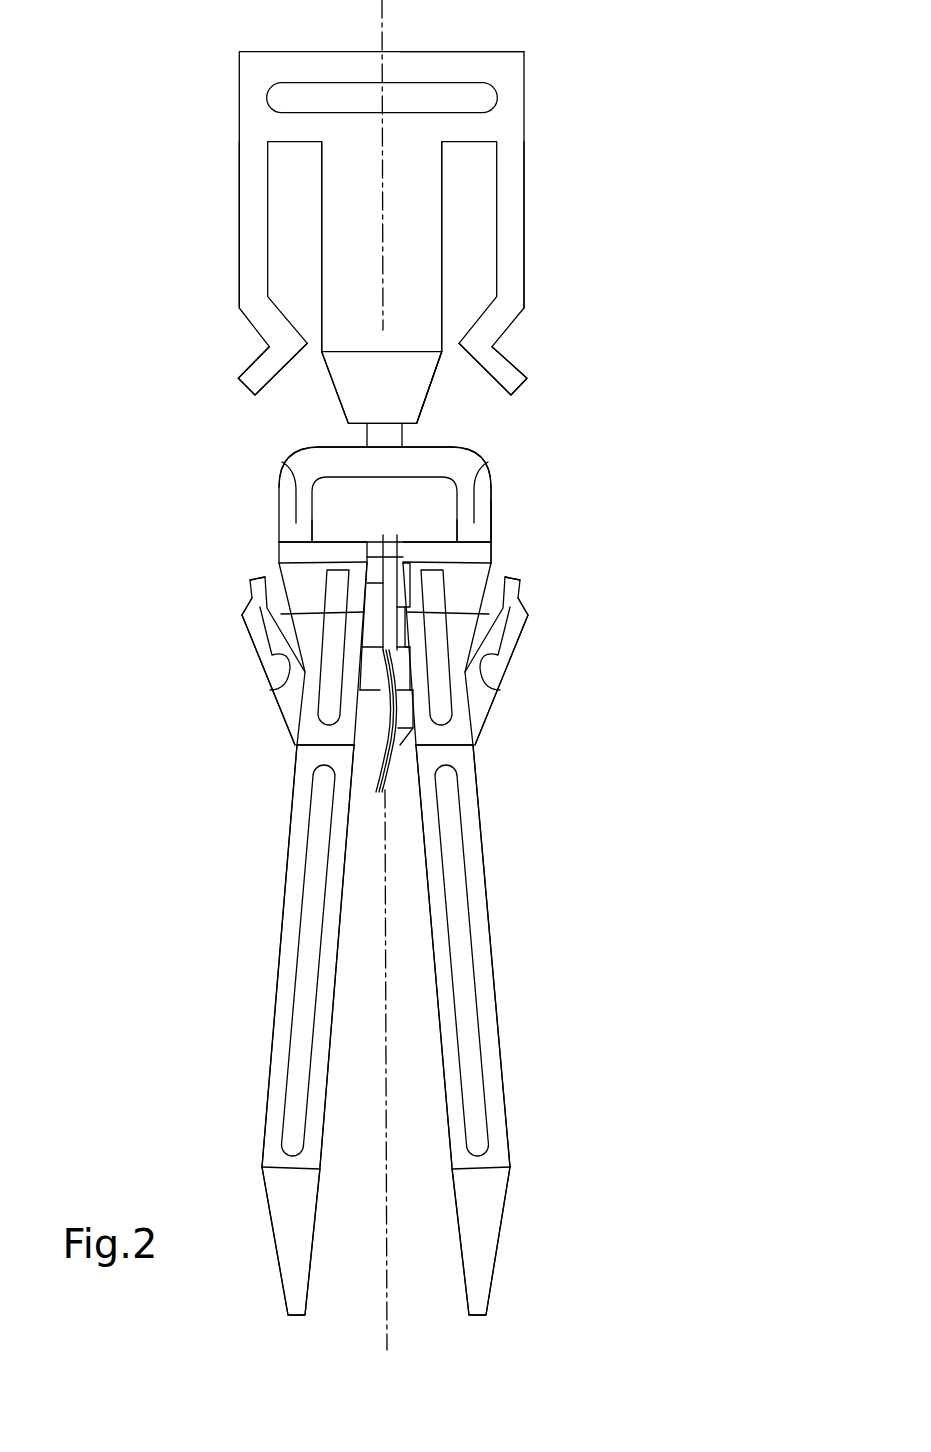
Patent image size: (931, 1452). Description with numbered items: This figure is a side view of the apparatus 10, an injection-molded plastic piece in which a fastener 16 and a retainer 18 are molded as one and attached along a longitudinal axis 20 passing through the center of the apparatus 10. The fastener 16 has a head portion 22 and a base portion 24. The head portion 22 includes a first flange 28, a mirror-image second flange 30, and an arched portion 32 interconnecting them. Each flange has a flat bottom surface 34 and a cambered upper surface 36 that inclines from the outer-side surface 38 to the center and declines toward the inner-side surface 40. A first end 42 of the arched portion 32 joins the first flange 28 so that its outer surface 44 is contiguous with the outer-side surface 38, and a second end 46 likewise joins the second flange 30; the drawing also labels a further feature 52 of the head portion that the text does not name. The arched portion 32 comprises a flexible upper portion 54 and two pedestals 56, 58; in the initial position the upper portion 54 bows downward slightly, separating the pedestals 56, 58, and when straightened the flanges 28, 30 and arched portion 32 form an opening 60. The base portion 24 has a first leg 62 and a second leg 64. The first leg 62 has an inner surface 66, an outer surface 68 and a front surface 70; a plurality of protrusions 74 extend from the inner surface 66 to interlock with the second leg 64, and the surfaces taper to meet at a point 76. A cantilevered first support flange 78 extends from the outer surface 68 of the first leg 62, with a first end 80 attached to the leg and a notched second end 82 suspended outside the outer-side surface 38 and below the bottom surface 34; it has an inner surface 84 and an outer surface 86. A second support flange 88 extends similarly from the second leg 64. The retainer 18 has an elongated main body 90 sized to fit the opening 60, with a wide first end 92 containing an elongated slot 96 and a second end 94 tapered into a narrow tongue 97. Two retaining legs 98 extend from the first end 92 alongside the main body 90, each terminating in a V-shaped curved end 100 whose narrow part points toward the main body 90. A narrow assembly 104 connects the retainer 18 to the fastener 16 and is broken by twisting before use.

The apparatus 10 is at (619, 394).
The fastener 16 is at (262, 921).
The retainer 18 is at (536, 85).
The longitudinal axis 20 is at (393, 2).
The head portion 22 is at (279, 505).
The base portion 24 is at (496, 830).
The first flange 28 is at (279, 543).
The second flange 30 is at (492, 550).
The arched portion 32 is at (460, 472).
The bottom surface 34 is at (247, 598).
The upper surface 36 is at (402, 540).
The outer-side surface 38 is at (252, 578).
The inner-side surface 40 is at (322, 538).
The first end 42 is at (268, 517).
The outer surface 44 is at (337, 452).
The second end 46 is at (485, 515).
The rounded corner 52 is at (443, 462).
The upper portion 54 is at (340, 464).
The pedestal 56 is at (284, 470).
The pedestal 58 is at (472, 497).
The opening 60 is at (366, 511).
The first leg 62 is at (258, 1071).
The second leg 64 is at (508, 974).
The inner surface 66 is at (330, 1007).
The outer surface 68 is at (277, 1007).
The front surface 70 is at (293, 1119).
The protrusions 74 is at (383, 690).
The point 76 is at (295, 1317).
The first support flange 78 is at (278, 723).
The first end 80 is at (293, 723).
The second end 82 is at (262, 612).
The inner surface 84 is at (263, 658).
The outer surface 86 is at (261, 608).
The second support flange 88 is at (518, 690).
The elongated main body 90 is at (366, 249).
The first end 92 is at (490, 50).
The second end 94 is at (422, 372).
The elongated slot 96 is at (303, 97).
The tongue 97 is at (366, 392).
The retaining legs 98 is at (537, 189).
The curved end 100 is at (253, 362).
The narrow assembly 104 is at (368, 437).